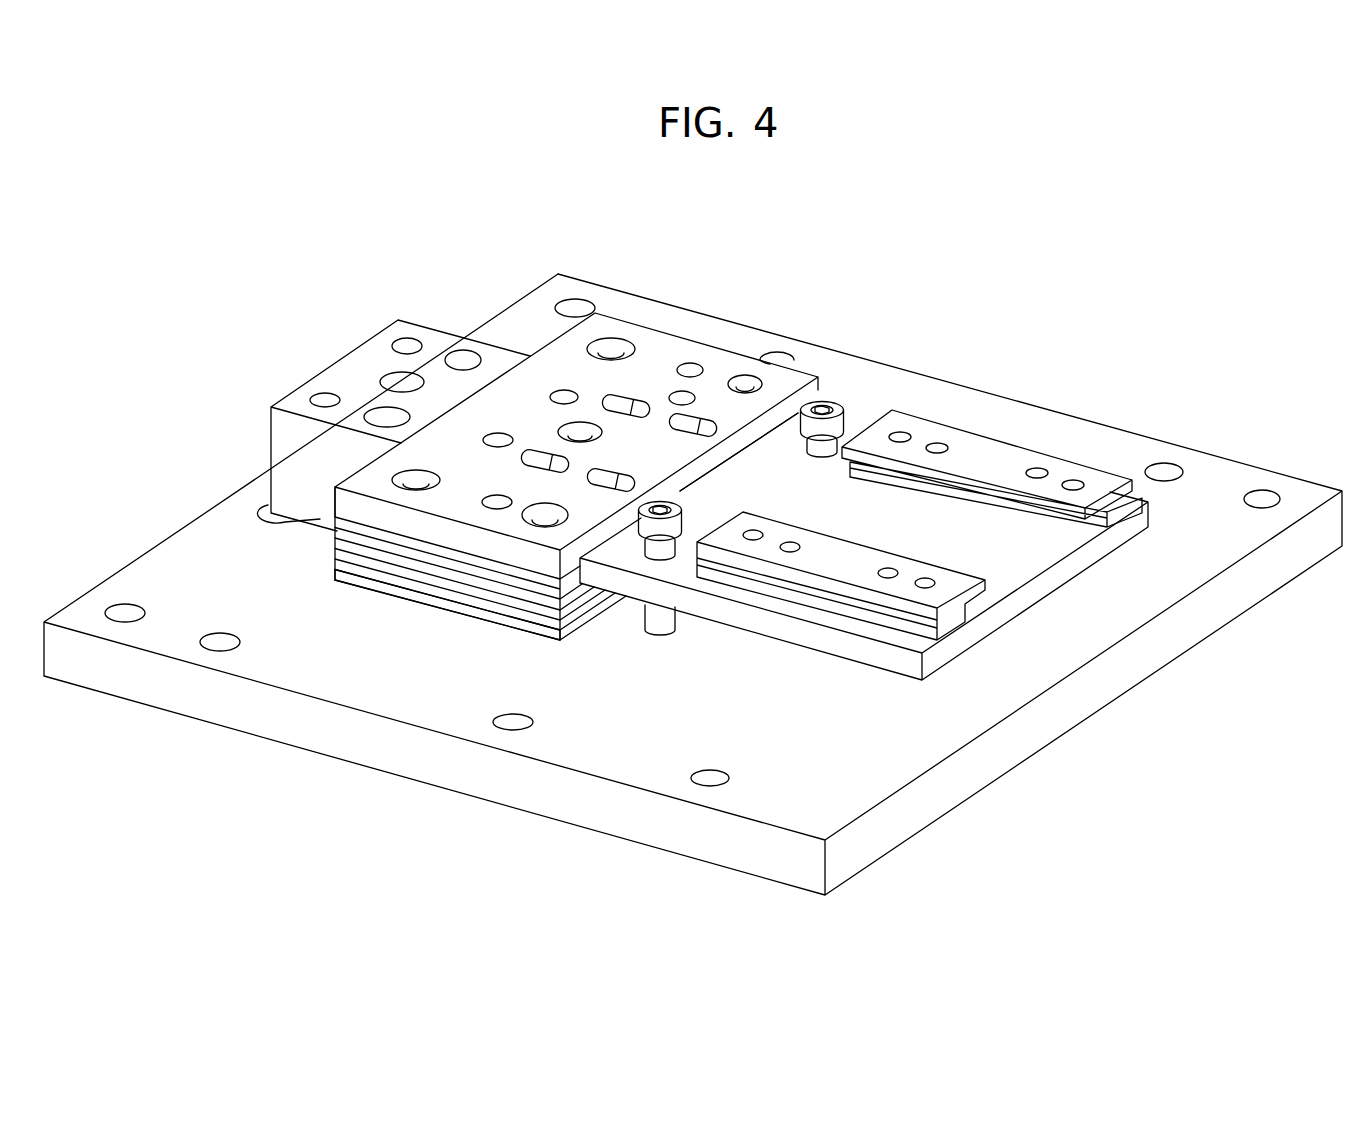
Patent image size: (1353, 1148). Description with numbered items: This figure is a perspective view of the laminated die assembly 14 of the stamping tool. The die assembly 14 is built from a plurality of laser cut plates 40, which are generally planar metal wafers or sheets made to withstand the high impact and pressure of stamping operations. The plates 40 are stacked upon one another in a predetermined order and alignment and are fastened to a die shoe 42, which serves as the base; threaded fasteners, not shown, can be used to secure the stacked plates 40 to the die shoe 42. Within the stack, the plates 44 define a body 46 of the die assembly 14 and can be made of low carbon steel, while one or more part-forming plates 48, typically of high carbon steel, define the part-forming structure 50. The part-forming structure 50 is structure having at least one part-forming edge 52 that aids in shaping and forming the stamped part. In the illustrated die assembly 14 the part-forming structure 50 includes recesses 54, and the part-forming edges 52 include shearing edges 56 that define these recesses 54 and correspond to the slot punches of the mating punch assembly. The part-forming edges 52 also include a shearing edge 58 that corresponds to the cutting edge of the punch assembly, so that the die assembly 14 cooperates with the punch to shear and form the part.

The die assembly 14 is at (874, 285).
The plates 40 is at (500, 548).
The die shoe 42 is at (1142, 650).
The plates 44 is at (332, 550).
The body 46 is at (473, 637).
The part-forming plates 48 is at (670, 350).
The part-forming structure 50 is at (586, 482).
The part-forming edge 52 is at (610, 402).
The recesses 54 is at (717, 433).
The shearing edges 56 is at (633, 396).
The shearing edge 58 is at (702, 456).